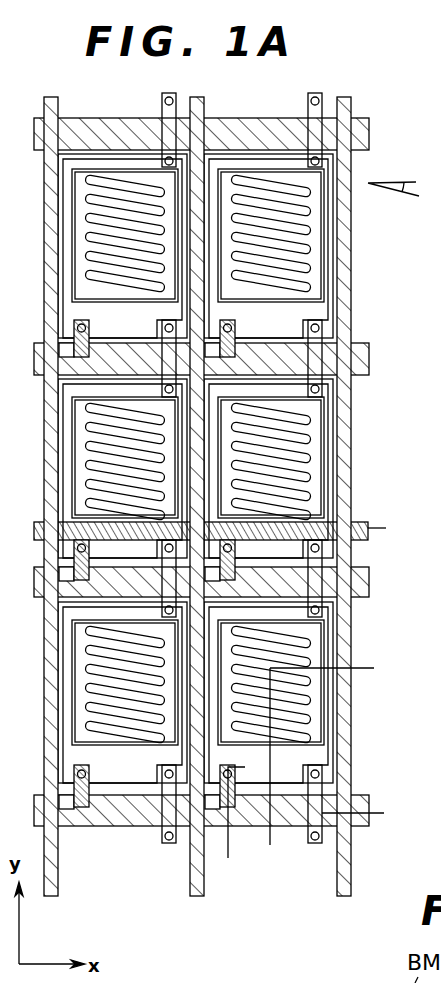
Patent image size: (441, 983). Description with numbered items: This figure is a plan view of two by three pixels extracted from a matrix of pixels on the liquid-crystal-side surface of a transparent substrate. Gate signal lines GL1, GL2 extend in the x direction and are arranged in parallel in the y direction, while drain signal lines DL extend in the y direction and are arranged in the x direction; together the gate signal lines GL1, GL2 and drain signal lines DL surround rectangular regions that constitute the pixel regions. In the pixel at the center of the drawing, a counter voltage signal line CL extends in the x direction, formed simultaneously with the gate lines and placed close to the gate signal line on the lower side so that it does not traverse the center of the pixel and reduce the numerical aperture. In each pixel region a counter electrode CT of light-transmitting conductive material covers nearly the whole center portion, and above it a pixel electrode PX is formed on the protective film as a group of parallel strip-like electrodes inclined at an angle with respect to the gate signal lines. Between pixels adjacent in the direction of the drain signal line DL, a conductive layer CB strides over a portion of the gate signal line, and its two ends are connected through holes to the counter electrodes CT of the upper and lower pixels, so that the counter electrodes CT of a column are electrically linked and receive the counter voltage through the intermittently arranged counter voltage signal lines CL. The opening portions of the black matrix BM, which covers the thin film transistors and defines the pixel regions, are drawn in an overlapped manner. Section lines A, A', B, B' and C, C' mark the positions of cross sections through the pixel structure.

The gate signal line GL1 is at (362, 131).
The gate signal line GL2 is at (369, 357).
The drain signal line DL is at (200, 512).
The counter voltage signal line CL is at (366, 522).
The conductive layer CB is at (352, 555).
The counter electrode CT is at (323, 396).
The pixel electrode PX is at (326, 429).
The black matrix BM is at (326, 458).
The section line A is at (229, 839).
The section line A' is at (249, 772).
The section line B is at (273, 770).
The section line B' is at (335, 669).
The section line C is at (361, 814).
The section line C' is at (389, 528).